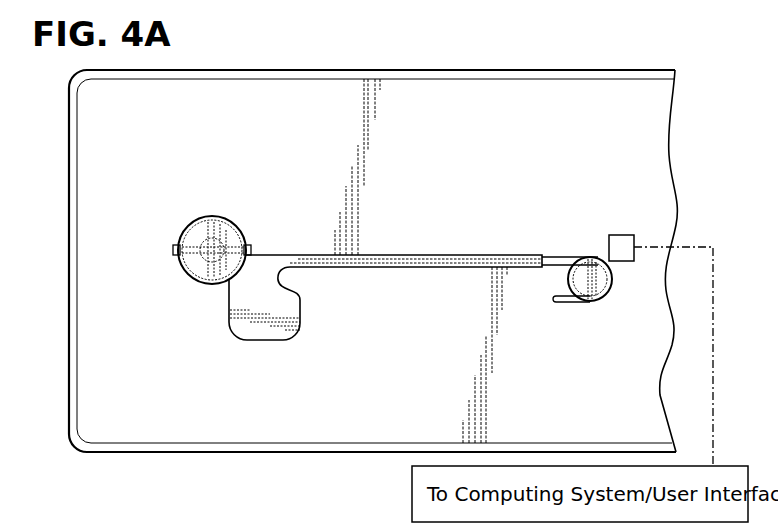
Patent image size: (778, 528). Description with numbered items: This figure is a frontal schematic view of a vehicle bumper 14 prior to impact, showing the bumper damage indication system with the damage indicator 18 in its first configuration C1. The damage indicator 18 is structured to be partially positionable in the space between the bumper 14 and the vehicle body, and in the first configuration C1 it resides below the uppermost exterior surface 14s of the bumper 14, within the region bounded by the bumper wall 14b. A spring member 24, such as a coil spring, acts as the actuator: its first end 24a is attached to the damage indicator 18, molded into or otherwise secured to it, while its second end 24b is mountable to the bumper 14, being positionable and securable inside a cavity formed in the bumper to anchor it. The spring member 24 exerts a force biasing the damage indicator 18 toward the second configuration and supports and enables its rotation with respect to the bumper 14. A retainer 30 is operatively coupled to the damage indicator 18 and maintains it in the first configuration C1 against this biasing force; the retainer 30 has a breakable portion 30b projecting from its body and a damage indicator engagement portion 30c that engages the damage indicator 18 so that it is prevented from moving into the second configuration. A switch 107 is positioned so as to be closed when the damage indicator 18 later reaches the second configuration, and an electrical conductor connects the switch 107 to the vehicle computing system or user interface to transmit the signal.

The bumper 14 is at (68, 139).
The uppermost exterior surface of the bumper 14s is at (184, 70).
The inner wall of housing 14b is at (453, 135).
The retainer 30 is at (203, 217).
The breakable portion 30b is at (175, 247).
The damage indicator engagement portion 30c is at (247, 246).
The damage indicator 18 is at (413, 268).
The spring member 24 is at (570, 257).
The spring member first end 24a is at (532, 256).
The spring member second end 24b is at (554, 300).
The switch 107 is at (622, 235).
The first configuration C1 is at (645, 176).